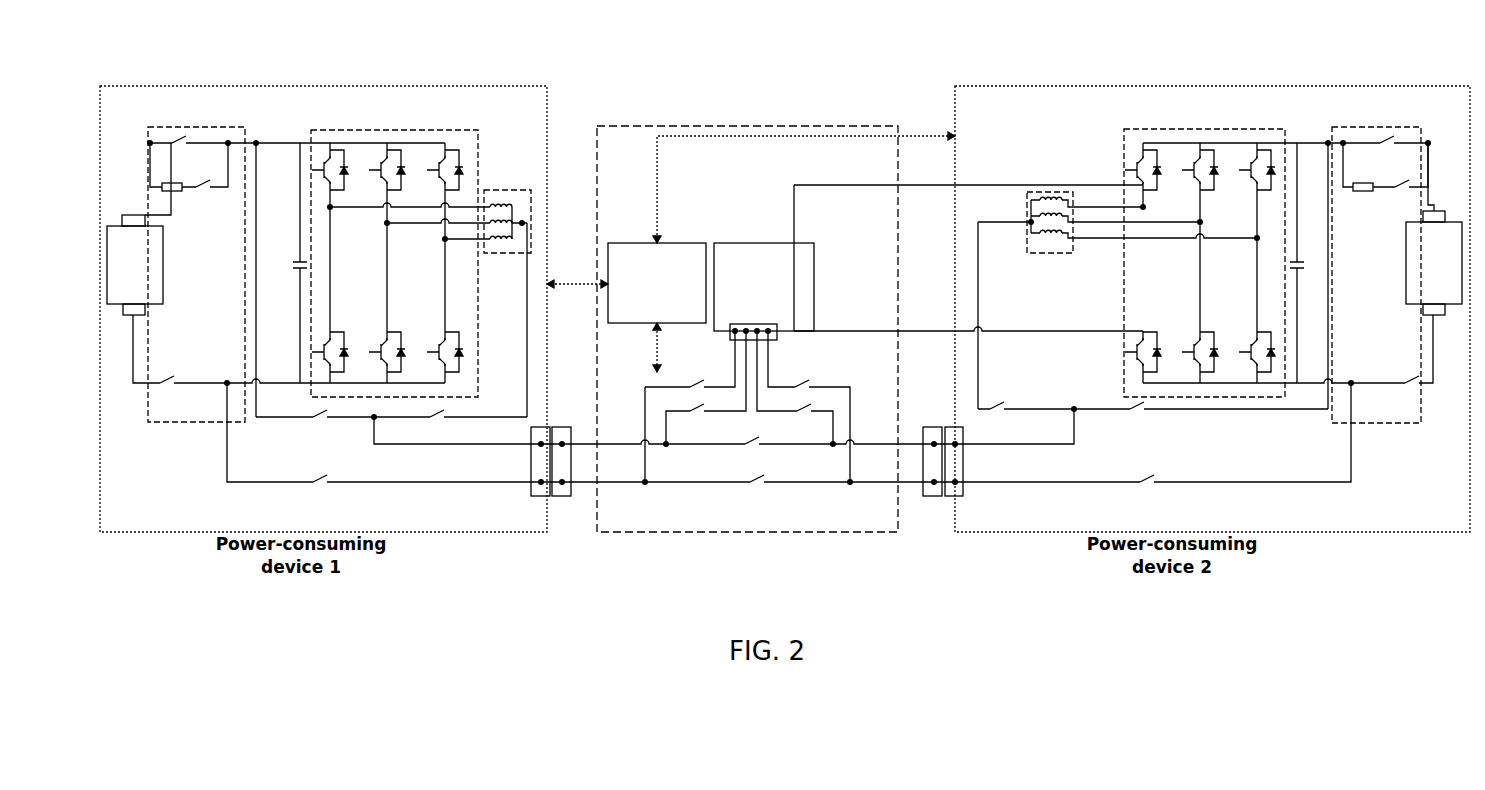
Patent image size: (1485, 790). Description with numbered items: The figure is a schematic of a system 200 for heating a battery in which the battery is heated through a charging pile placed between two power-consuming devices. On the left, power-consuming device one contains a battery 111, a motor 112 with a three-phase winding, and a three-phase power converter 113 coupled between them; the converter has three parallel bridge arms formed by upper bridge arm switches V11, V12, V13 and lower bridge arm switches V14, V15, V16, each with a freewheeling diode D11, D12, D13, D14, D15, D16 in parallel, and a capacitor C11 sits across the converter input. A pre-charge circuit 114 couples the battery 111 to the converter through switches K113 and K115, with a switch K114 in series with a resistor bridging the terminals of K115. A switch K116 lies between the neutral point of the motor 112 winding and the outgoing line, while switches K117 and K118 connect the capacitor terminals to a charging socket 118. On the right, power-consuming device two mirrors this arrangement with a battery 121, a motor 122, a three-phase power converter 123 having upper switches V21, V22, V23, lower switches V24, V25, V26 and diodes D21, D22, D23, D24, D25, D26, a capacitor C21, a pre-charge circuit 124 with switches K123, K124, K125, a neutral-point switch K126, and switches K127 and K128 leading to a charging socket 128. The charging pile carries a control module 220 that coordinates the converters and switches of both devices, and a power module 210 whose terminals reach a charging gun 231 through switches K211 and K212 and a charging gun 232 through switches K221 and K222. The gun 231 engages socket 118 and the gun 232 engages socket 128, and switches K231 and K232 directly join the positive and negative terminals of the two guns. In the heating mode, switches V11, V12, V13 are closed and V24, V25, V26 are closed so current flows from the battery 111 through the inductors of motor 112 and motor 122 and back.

The battery 111 is at (135, 265).
The motor 112 is at (507, 212).
The three-phase power converter 113 is at (398, 254).
The pre-charge circuit 114 is at (222, 264).
The charging socket 118 is at (465, 473).
The battery 121 is at (1434, 263).
The motor 122 is at (1117, 212).
The three-phase power converter 123 is at (1237, 253).
The pre-charge circuit 124 is at (1382, 262).
The charging socket 128 is at (1009, 480).
The system for heating a battery 200 is at (845, 356).
The power module 210 is at (764, 262).
The control module 220 is at (657, 283).
The charging gun 231 is at (585, 510).
The charging gun 232 is at (935, 510).
The capacitor C11 is at (290, 263).
The bus capacitor of device 2 C21 is at (1287, 263).
The switch K113 is at (222, 358).
The switch K114 is at (189, 175).
The switch K115 is at (179, 150).
The switch K116 is at (450, 422).
The switch K117 is at (315, 422).
The switch K118 is at (438, 487).
The switch K123 is at (1392, 358).
The switch K124 is at (1385, 175).
The switch K125 is at (1385, 150).
The switch K126 is at (1026, 413).
The switch K127 is at (1201, 414).
The switch K128 is at (1240, 444).
The switch K211 is at (706, 387).
The switch K212 is at (690, 367).
The switch K221 is at (795, 387).
The switch K222 is at (809, 406).
The switch K231 is at (749, 449).
The switch K232 is at (822, 487).
The upper bridge arm switch V11 is at (318, 167).
The upper bridge arm switch V12 is at (375, 167).
The upper bridge arm switch V13 is at (433, 167).
The lower bridge arm switch V14 is at (319, 356).
The lower bridge arm switch V15 is at (375, 356).
The lower bridge arm switch V16 is at (433, 356).
The upper bridge arm switch V21 is at (1131, 167).
The upper bridge arm switch V22 is at (1188, 167).
The upper bridge arm switch V23 is at (1245, 167).
The lower bridge arm switch V24 is at (1132, 356).
The lower bridge arm switch V25 is at (1188, 356).
The lower bridge arm switch V26 is at (1245, 356).
The freewheeling diode D11 is at (347, 170).
The freewheeling diode D12 is at (404, 170).
The freewheeling diode D13 is at (462, 170).
The freewheeling diode D14 is at (347, 352).
The freewheeling diode D15 is at (404, 352).
The freewheeling diode D16 is at (462, 352).
The freewheeling diode D21 is at (1160, 170).
The freewheeling diode D22 is at (1217, 170).
The freewheeling diode D23 is at (1274, 170).
The freewheeling diode D24 is at (1160, 352).
The freewheeling diode D25 is at (1217, 352).
The freewheeling diode D26 is at (1274, 352).